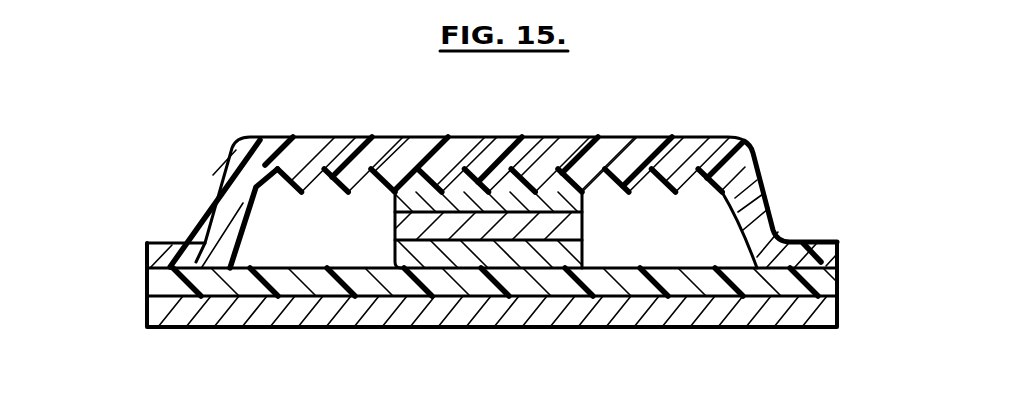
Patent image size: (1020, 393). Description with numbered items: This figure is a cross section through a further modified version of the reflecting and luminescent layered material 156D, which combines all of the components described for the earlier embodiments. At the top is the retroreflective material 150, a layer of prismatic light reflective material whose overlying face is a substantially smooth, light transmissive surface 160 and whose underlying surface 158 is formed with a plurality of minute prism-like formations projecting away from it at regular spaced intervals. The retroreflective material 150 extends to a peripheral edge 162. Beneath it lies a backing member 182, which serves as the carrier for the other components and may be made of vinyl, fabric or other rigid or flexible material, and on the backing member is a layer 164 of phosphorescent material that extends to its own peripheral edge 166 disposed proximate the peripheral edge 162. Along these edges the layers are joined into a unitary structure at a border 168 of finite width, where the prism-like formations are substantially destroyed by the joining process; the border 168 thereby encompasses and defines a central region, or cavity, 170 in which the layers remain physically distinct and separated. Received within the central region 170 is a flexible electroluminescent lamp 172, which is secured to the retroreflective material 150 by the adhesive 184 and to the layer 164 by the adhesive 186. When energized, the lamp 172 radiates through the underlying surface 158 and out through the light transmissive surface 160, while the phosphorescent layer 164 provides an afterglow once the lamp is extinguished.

The reflecting and luminescent layered material 156D is at (201, 166).
The retroreflective material 150 is at (696, 154).
The light transmissive surface 160 is at (585, 135).
The border 168 is at (168, 243).
The underlying surface 158 is at (313, 188).
The adhesive 184 is at (394, 204).
The layer of adhesive 186 is at (393, 248).
The electroluminescent lamp 172 is at (584, 220).
The peripheral edge 166 is at (840, 281).
The layer of phosphorescent material 164 is at (671, 280).
The central region 170 is at (712, 239).
The peripheral edge 162 is at (840, 253).
The backing member 182 is at (702, 310).